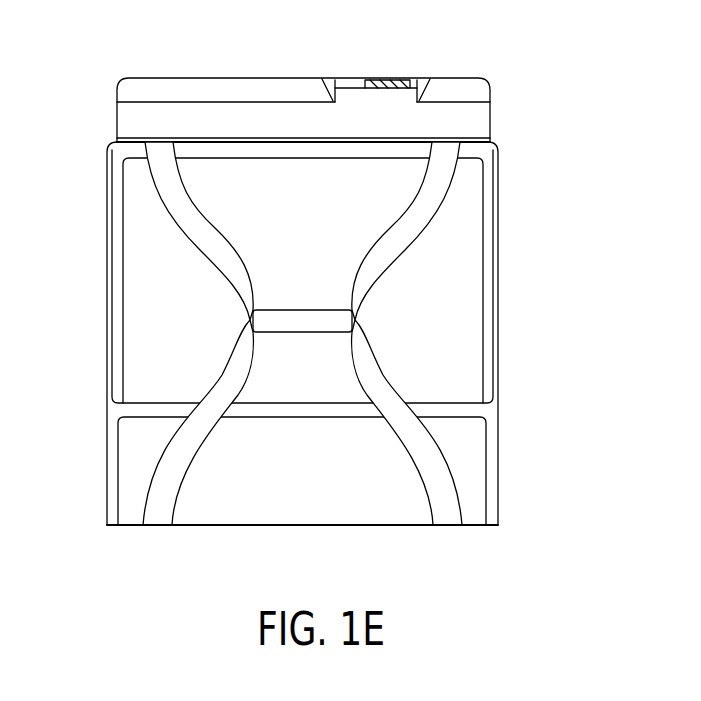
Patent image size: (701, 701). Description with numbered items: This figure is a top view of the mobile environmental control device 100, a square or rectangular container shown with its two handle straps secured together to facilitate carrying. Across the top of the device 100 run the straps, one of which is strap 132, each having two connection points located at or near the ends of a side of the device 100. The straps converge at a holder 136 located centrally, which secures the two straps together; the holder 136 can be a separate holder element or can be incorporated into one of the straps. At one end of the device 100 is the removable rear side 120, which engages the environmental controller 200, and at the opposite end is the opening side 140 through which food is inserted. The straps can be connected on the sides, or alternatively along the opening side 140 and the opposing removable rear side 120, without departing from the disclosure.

The mobile environmental control device 100 is at (522, 100).
The removable rear side 120 is at (313, 80).
The environmental controller 200 is at (113, 130).
The strap 132 is at (403, 223).
The holder 136 is at (299, 320).
The opening side 140 is at (423, 527).